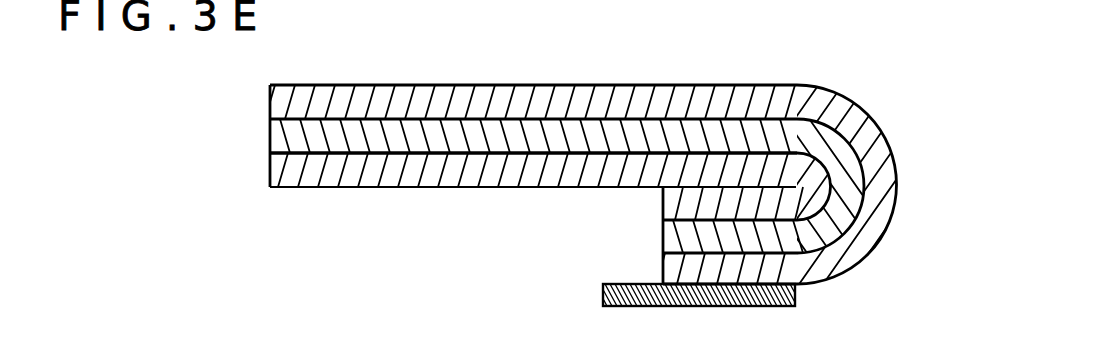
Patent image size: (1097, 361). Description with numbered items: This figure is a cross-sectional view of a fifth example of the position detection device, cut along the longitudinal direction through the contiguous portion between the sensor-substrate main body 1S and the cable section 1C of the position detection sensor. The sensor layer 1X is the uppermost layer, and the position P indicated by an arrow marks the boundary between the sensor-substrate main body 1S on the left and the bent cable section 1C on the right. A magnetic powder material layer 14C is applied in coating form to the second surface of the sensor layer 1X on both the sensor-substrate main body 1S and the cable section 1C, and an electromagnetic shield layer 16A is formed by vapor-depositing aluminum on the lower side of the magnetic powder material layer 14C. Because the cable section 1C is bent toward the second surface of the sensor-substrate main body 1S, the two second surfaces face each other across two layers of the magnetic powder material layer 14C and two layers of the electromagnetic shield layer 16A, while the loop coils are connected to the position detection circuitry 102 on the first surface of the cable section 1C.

The sensor layer 1X is at (270, 101).
The magnetic powder material layer 14C is at (275, 132).
The electromagnetic shield layer 16A is at (435, 178).
The sensor-substrate main body 1S is at (580, 78).
The position P is at (797, 76).
The cable section 1C is at (909, 203).
The position detection circuitry 102 is at (702, 306).